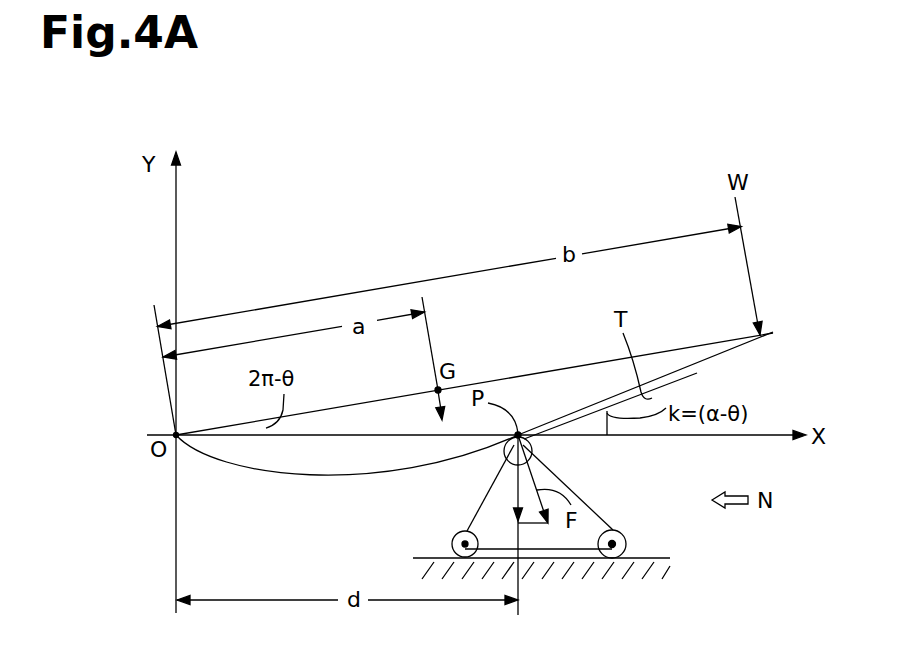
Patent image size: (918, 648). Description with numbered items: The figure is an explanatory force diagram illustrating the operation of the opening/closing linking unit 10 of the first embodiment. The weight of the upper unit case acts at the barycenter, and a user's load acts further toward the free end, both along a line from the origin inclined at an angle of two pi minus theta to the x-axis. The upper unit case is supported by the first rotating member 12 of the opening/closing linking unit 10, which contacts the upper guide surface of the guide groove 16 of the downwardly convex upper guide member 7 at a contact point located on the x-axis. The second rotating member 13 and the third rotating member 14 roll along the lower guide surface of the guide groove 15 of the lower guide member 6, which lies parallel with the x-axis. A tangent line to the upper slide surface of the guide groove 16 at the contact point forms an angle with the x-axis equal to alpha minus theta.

The upper guide member 7 is at (708, 373).
The guide groove 16 is at (474, 403).
The opening/closing linking unit 10 is at (612, 487).
The first rotating member 12 is at (531, 448).
The second rotating member 13 is at (454, 537).
The third rotating member 14 is at (612, 558).
The lower guide member 6 is at (655, 558).
The guide groove 15 is at (541, 568).